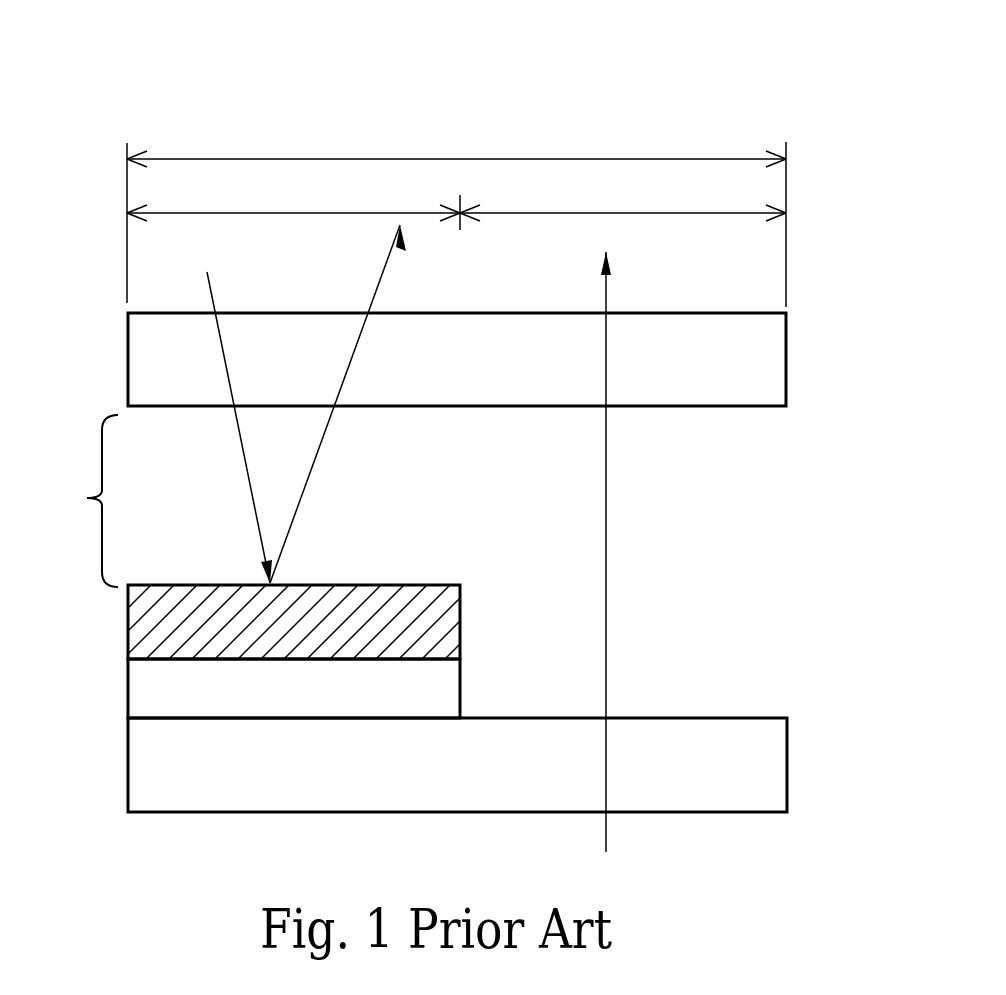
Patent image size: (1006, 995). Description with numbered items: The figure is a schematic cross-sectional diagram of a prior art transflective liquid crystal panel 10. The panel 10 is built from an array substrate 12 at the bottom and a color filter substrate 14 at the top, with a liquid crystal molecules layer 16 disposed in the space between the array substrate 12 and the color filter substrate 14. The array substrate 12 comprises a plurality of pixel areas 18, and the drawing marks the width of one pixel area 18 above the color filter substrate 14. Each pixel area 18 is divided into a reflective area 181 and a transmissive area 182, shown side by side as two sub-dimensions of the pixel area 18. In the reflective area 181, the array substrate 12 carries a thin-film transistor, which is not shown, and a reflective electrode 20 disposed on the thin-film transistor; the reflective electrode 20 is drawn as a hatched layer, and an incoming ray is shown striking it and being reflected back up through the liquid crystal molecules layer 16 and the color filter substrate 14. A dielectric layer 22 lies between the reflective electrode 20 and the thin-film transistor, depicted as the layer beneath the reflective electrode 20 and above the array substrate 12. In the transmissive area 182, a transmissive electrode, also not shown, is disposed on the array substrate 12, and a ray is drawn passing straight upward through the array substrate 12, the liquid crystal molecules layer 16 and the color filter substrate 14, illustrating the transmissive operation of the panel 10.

The transflective liquid crystal panel 10 is at (843, 140).
The array substrate 12 is at (127, 775).
The color filter substrate 14 is at (127, 370).
The liquid crystal molecules layer 16 is at (87, 498).
The pixel area 18 is at (456, 213).
The reflective area 181 is at (293, 379).
The transmissive area 182 is at (623, 513).
The reflective electrode 20 is at (127, 620).
The dielectric layer 22 is at (127, 702).